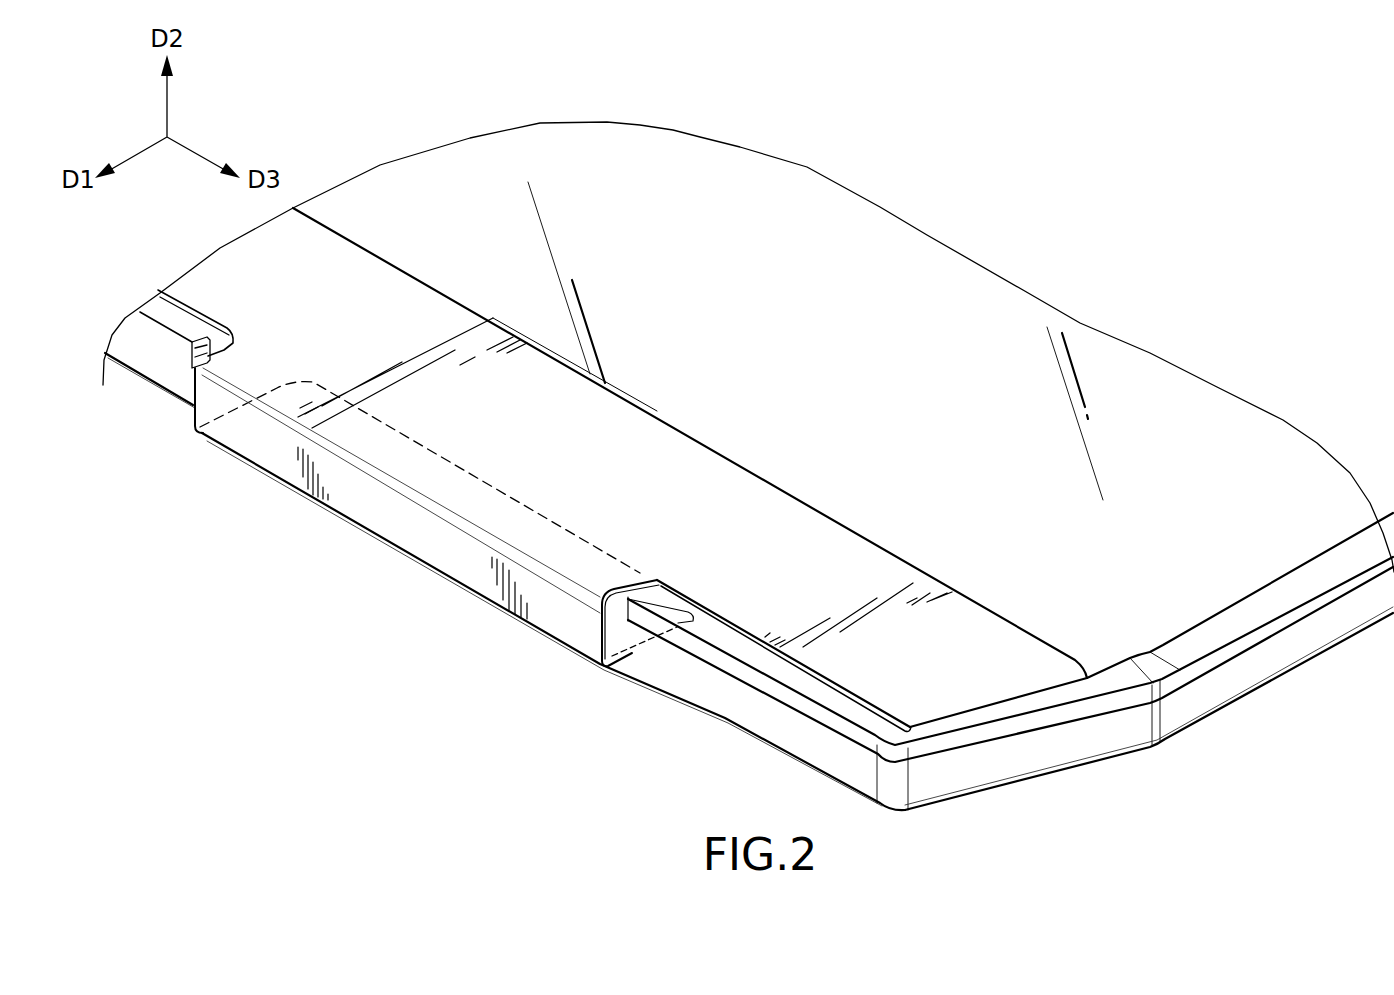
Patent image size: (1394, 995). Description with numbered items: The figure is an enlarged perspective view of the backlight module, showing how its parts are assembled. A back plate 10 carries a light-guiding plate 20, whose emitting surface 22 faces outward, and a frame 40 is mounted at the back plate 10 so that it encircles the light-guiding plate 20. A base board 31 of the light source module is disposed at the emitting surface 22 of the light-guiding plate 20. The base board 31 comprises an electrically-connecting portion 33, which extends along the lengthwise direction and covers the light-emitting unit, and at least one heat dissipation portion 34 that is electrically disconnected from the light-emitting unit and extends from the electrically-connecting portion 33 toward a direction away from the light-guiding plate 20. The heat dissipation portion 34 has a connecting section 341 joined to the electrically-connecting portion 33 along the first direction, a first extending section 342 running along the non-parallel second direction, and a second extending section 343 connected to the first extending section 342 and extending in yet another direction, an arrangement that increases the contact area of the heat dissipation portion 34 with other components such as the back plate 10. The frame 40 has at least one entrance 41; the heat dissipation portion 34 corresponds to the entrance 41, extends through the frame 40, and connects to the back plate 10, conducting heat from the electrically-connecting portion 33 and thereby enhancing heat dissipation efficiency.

The back plate 10 is at (1255, 667).
The light-guiding plate 20 is at (748, 424).
The emitting surface 22 is at (925, 282).
The base board 31 is at (700, 427).
The electrically-connecting portion 33 is at (788, 517).
The heat dissipation portion 34 is at (553, 589).
The connecting section 341 is at (440, 488).
The first extending section 342 is at (490, 578).
The second extending section 343 is at (650, 635).
The frame 40 is at (1083, 711).
The entrance 41 is at (208, 345).